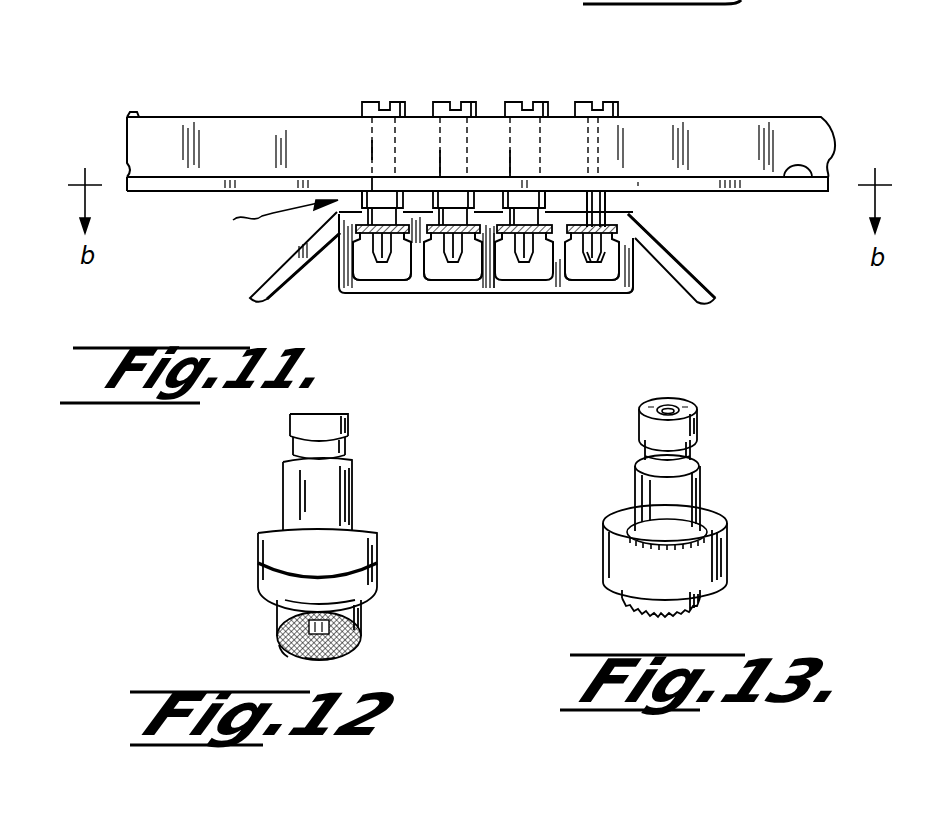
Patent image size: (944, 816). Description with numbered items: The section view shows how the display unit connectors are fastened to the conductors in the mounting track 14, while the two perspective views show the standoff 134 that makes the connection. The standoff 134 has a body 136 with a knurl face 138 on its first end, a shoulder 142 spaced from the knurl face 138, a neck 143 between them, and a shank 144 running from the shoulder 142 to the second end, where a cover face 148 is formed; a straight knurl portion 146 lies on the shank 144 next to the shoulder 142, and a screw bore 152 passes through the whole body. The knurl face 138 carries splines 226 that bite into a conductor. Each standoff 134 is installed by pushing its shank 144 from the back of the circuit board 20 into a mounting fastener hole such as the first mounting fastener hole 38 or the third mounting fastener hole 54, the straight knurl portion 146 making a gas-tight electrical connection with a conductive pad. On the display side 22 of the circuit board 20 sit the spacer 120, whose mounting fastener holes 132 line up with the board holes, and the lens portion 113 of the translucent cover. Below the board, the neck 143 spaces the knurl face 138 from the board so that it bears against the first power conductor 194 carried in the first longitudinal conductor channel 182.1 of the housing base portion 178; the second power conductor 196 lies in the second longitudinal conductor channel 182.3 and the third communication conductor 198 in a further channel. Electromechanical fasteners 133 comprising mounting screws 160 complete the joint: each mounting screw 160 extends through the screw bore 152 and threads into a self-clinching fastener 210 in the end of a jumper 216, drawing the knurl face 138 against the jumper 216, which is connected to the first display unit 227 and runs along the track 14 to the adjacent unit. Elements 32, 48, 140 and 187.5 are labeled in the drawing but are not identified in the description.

In FIG. 11, the mounting track 14 is at (295, 253).
In FIG. 11, the circuit board 20 is at (763, 190).
In FIG. 11, the display side 22 is at (788, 192).
In FIG. 11, the contact 32 is at (437, 188).
In FIG. 11, the first mounting fastener hole 38 is at (377, 180).
In FIG. 11, the contact 48 is at (445, 182).
In FIG. 11, the third mounting fastener hole 54 is at (510, 183).
In FIG. 11, the lens portion 113 is at (793, 117).
In FIG. 11, the spacer 120 is at (801, 138).
In FIG. 11, the mounting fastener holes 132 is at (370, 146).
In FIG. 11, the electromechanical fasteners 133 is at (264, 213).
In FIG. 11, the standoff 134 is at (445, 133).
In FIG. 12, the standoff 134 is at (337, 482).
In FIG. 13, the standoff 134 is at (657, 489).
In FIG. 12, the body 136 is at (283, 490).
In FIG. 13, the body 136 is at (698, 477).
In FIG. 12, the knurl face 138 is at (360, 638).
In FIG. 12, the collar 140 is at (293, 609).
In FIG. 12, the shoulder 142 is at (280, 553).
In FIG. 13, the shoulder 142 is at (727, 571).
In FIG. 12, the neck 143 is at (325, 603).
In FIG. 13, the neck 143 is at (688, 614).
In FIG. 12, the shank 144 is at (318, 506).
In FIG. 13, the shank 144 is at (667, 513).
In FIG. 13, the straight knurl portion 146 is at (705, 534).
In FIG. 13, the cover face 148 is at (692, 416).
In FIG. 12, the screw bore 152 is at (335, 656).
In FIG. 13, the screw bore 152 is at (670, 405).
In FIG. 11, the mounting screw 160 is at (608, 200).
In FIG. 11, the housing base portion 178 is at (623, 288).
In FIG. 11, the first longitudinal conductor channel 182.1 is at (367, 267).
In FIG. 11, the second longitudinal conductor channel 182.3 is at (443, 267).
In FIG. 11, the receptacle 187.5 is at (532, 268).
In FIG. 11, the first power conductor 194 is at (363, 200).
In FIG. 11, the second power conductor 196 is at (466, 260).
In FIG. 11, the third communication conductor 198 is at (556, 200).
In FIG. 11, the self-clinching fastener 210 is at (611, 240).
In FIG. 11, the jumper 216 is at (621, 212).
In FIG. 12, the splines 226 is at (283, 648).
In FIG. 11, the first display unit 227 is at (757, 114).